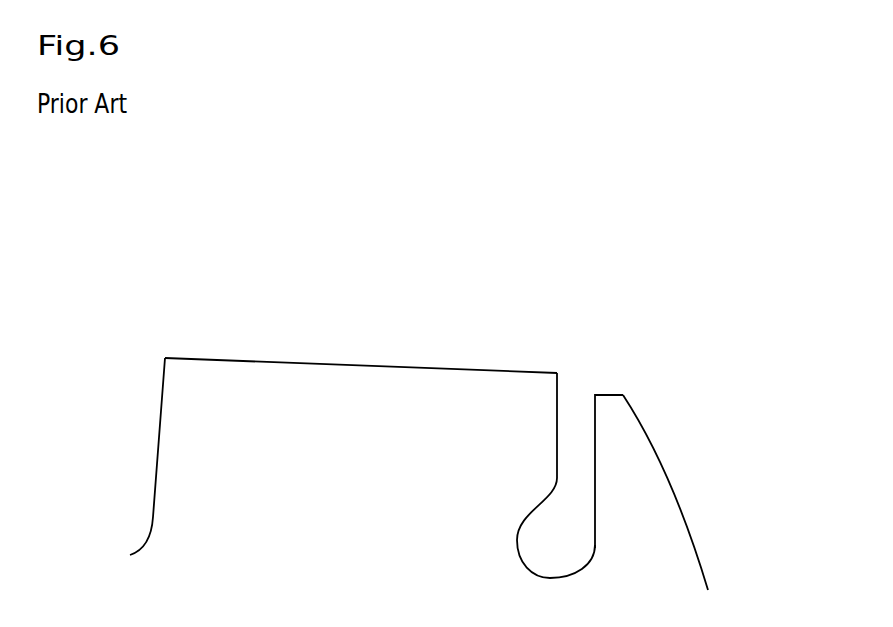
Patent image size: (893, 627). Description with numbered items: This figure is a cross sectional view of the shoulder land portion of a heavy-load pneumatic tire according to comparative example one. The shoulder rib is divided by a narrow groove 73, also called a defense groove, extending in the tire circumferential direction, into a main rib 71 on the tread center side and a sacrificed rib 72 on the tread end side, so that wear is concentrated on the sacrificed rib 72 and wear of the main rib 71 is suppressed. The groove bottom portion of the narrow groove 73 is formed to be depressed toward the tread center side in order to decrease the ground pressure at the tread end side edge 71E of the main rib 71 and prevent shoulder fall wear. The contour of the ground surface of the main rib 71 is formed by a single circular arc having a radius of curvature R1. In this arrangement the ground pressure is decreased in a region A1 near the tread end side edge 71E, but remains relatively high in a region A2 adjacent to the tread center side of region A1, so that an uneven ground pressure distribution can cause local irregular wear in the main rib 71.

The main rib 71 is at (293, 357).
The tread end side edge 71E is at (560, 372).
The sacrificed rib 72 is at (610, 393).
The narrow groove 73 is at (590, 490).
The radius of curvature R1 is at (308, 361).
The region A1 is at (487, 361).
The region A2 is at (387, 358).